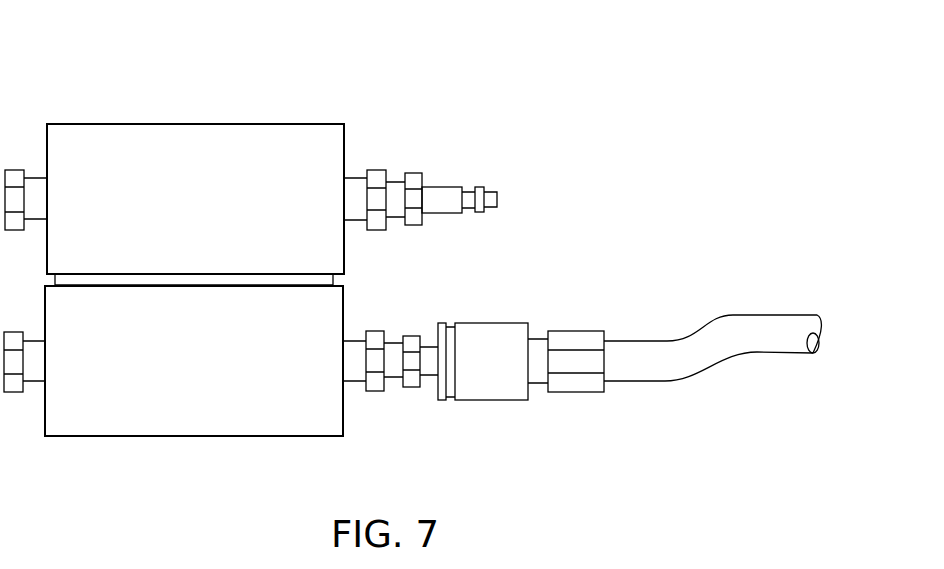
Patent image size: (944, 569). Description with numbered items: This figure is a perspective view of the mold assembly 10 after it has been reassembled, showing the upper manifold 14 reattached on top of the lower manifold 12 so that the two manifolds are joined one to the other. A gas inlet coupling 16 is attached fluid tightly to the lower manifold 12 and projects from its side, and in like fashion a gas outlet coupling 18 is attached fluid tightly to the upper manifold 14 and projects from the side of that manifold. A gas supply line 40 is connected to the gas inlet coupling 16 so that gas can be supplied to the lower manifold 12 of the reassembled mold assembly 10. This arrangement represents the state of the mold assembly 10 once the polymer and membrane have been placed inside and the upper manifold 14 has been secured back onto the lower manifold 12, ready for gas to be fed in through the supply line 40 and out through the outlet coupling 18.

The mold assembly 10 is at (60, 98).
The lower manifold 12 is at (90, 437).
The upper manifold 14 is at (293, 124).
The gas inlet coupling 16 is at (393, 373).
The gas outlet coupling 18 is at (447, 193).
The gas supply line 40 is at (722, 355).